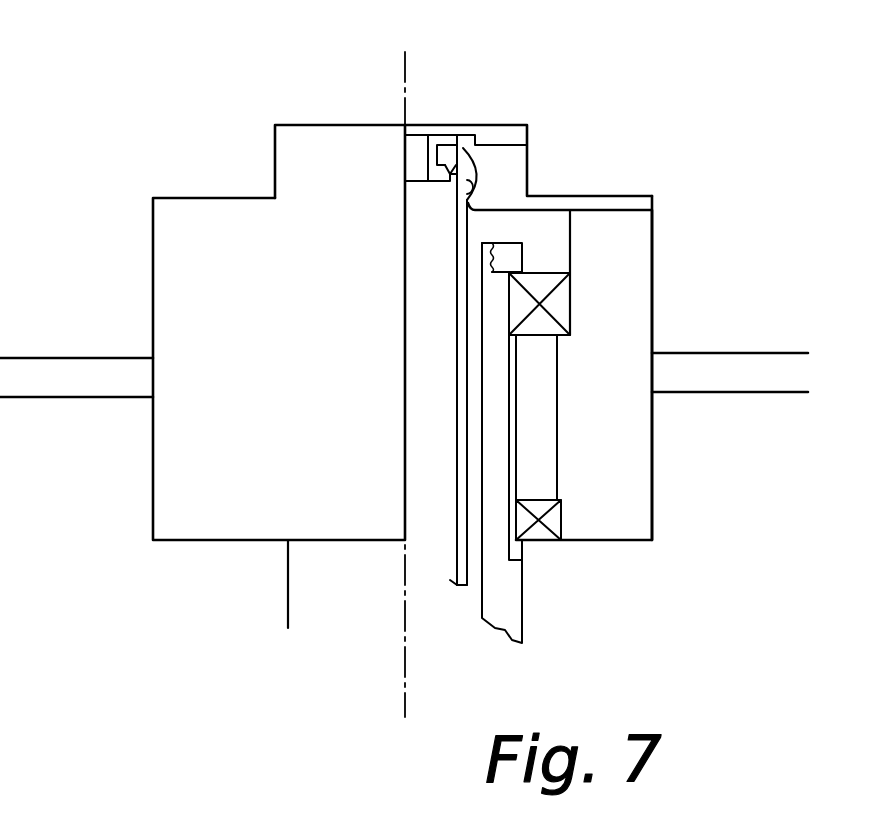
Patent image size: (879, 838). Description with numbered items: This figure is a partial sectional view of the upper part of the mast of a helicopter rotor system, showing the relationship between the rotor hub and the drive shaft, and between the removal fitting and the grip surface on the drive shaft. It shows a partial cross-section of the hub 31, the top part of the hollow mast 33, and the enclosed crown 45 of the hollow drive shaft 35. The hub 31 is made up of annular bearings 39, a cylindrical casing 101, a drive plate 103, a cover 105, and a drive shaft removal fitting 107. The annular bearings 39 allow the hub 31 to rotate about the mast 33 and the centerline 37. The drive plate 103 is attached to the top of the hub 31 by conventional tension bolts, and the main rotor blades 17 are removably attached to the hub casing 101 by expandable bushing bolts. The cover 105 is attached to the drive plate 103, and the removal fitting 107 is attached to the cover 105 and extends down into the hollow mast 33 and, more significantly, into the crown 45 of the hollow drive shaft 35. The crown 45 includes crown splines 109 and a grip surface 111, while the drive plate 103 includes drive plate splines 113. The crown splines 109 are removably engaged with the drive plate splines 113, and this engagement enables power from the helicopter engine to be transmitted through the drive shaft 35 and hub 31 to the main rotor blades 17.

The main rotor blades 17 is at (78, 395).
The hub 31 is at (167, 257).
The mast 33 is at (298, 563).
The drive shaft 35 is at (458, 532).
The centerline 37 is at (405, 668).
The annular bearings 39 is at (560, 300).
The crown 45 is at (473, 157).
The cylindrical casing 101 is at (653, 323).
The drive plate 103 is at (652, 204).
The cover 105 is at (453, 125).
The drive shaft removal fitting 107 is at (408, 160).
The crown splines 109 is at (478, 192).
The grip surface 111 is at (455, 165).
The drive plate splines 113 is at (477, 172).